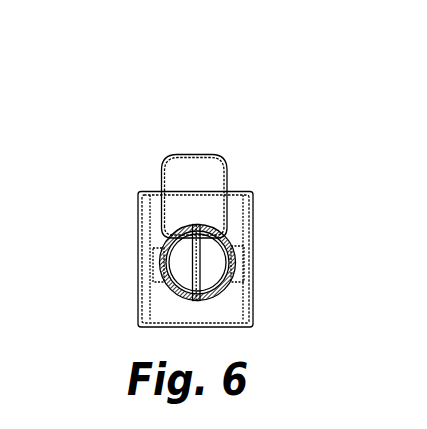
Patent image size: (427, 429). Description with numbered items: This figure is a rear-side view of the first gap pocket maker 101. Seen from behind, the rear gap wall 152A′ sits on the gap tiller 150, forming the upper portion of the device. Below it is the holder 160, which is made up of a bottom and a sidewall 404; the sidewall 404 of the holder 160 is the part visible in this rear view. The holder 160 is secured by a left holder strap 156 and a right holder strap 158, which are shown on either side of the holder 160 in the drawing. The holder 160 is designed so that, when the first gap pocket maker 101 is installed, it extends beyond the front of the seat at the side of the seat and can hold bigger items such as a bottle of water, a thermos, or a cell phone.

The first gap pocket maker 101 is at (164, 128).
The rear gap wall 152A′ is at (195, 148).
The holder 160 is at (250, 183).
The left holder strap 156 is at (152, 270).
The right holder strap 158 is at (244, 265).
The gap tiller 150 is at (174, 283).
The sidewall 404 is at (226, 298).